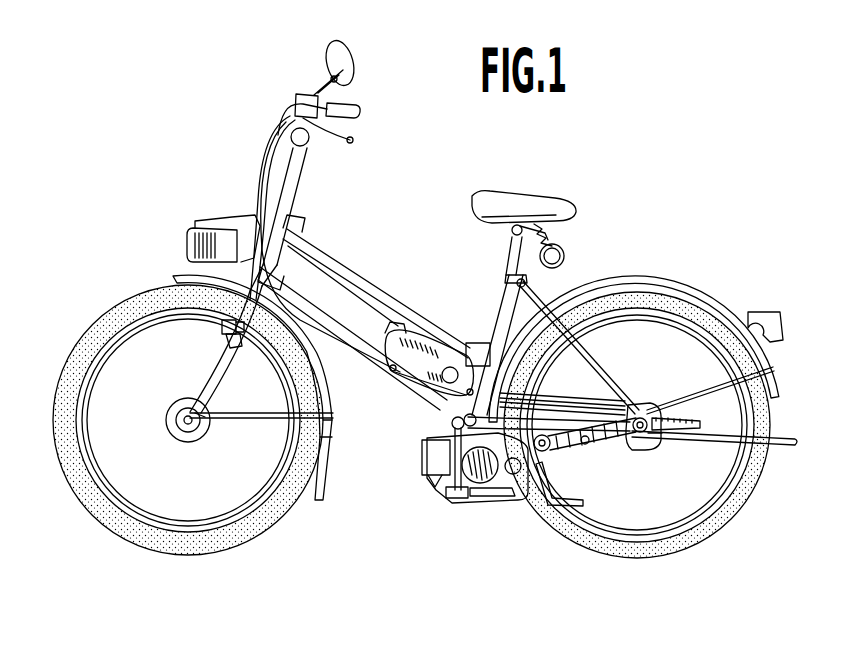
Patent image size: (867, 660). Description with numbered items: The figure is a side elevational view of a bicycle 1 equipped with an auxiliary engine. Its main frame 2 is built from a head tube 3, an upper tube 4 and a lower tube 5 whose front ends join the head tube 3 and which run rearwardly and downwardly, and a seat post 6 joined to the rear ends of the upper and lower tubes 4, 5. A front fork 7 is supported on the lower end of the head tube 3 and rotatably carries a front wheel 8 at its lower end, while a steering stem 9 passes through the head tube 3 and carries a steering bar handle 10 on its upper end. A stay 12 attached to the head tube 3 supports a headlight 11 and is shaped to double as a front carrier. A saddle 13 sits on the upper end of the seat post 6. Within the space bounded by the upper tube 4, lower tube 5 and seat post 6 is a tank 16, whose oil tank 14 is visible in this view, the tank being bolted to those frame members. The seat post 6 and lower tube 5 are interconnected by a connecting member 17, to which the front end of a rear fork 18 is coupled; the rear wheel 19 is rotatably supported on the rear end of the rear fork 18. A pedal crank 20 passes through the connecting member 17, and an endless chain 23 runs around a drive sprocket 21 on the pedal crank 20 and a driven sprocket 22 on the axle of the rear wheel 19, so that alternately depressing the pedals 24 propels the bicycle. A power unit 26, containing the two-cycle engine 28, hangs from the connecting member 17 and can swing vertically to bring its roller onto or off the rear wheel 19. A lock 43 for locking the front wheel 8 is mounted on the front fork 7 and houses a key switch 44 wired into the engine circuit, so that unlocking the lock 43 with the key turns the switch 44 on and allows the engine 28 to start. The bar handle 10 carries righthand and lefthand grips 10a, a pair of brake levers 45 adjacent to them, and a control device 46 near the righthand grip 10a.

The bicycle 1 is at (585, 188).
The main frame 2 is at (378, 288).
The head tube 3 is at (298, 231).
The upper tube 4 is at (400, 303).
The lower tube 5 is at (367, 350).
The seat post 6 is at (494, 332).
The front fork 7 is at (226, 374).
The front wheel 8 is at (77, 358).
The steering stem 9 is at (297, 181).
The steering bar handle 10 is at (300, 100).
The grip 10a is at (358, 109).
The headlight 11 is at (187, 241).
The stay 12 is at (230, 217).
The saddle 13 is at (497, 198).
The oil tank 14 is at (417, 342).
The tank 16 is at (428, 353).
The connecting member 17 is at (450, 448).
The rear fork 18 is at (598, 425).
The rear wheel 19 is at (713, 533).
The pedal crank 20 is at (455, 498).
The drive sprocket 21 is at (440, 422).
The driven sprocket 22 is at (643, 404).
The endless chain 23 is at (562, 396).
The pedal 24 is at (480, 497).
The power unit 26 is at (485, 462).
The 2-cycle engine 28 is at (420, 471).
The lock 43 is at (226, 338).
The key switch 44 is at (222, 326).
The brake lever 45 is at (355, 140).
The control device 46 is at (340, 92).